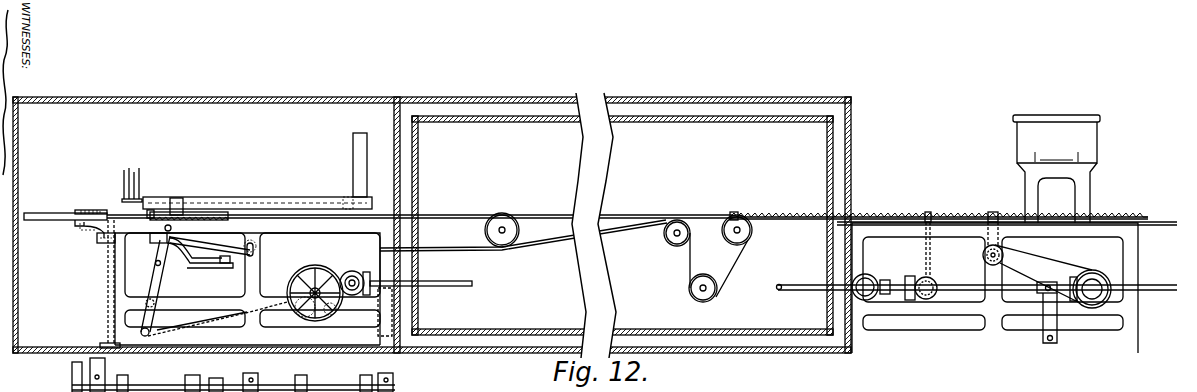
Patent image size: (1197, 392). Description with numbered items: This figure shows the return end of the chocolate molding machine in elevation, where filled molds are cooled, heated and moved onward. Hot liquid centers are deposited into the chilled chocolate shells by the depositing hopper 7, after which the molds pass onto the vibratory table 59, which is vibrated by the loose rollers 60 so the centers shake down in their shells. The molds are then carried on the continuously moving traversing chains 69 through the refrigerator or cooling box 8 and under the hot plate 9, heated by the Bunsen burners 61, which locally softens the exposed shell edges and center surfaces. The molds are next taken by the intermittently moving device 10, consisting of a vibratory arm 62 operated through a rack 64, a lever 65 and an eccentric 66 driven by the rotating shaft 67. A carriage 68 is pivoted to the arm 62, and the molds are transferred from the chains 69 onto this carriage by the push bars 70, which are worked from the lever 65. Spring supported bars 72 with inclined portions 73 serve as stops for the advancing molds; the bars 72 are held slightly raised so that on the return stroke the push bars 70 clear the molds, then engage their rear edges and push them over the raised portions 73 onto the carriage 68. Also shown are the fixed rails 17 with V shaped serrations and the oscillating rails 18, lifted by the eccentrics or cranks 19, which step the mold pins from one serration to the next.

The depositing hopper 7 is at (1032, 140).
The refrigerator or cooling box 8 is at (622, 225).
The hot plate 9 is at (297, 197).
The intermittently moving device 10 is at (60, 213).
The fixed rails 17 is at (937, 213).
The rails 18 is at (880, 213).
The eccentrics or cranks 19 is at (923, 278).
The vibratory table 59 is at (1001, 204).
The loose rollers 60 is at (983, 256).
The Bunsen burners 61 is at (138, 202).
The vibratory arm 62 is at (96, 228).
The rack 64 is at (103, 243).
The lever 65 is at (151, 280).
The eccentric 66 is at (293, 288).
The rotating shaft 67 is at (350, 279).
The carriage 68 is at (90, 211).
The traversing chains 69 is at (459, 248).
The push bars 70 is at (186, 260).
The spring supported bars 72 is at (208, 212).
The inclined portions 73 is at (152, 211).